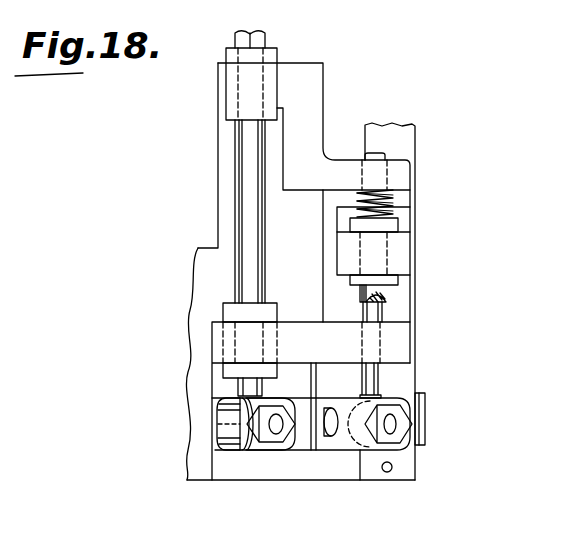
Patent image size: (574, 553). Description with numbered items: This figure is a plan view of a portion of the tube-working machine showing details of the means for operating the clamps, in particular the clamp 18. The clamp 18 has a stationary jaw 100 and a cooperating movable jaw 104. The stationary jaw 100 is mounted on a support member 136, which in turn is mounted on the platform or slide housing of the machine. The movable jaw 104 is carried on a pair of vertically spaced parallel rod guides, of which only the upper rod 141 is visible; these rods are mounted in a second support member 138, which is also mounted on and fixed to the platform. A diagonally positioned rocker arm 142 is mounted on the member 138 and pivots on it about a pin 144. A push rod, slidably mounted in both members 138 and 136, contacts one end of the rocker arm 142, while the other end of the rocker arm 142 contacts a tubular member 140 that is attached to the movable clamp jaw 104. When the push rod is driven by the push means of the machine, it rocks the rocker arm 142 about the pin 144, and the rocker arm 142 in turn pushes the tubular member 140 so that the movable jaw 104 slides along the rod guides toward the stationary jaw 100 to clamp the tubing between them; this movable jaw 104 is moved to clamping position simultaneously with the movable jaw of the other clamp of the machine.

The support member 136 is at (315, 117).
The stationary jaw 100 is at (400, 190).
The clamp 18 is at (405, 199).
The movable jaw 104 is at (405, 223).
The upper rod 141 is at (388, 295).
The tubular member 140 is at (382, 310).
The support member 138 is at (306, 366).
The pin 144 is at (333, 409).
The rocker arm 142 is at (333, 452).